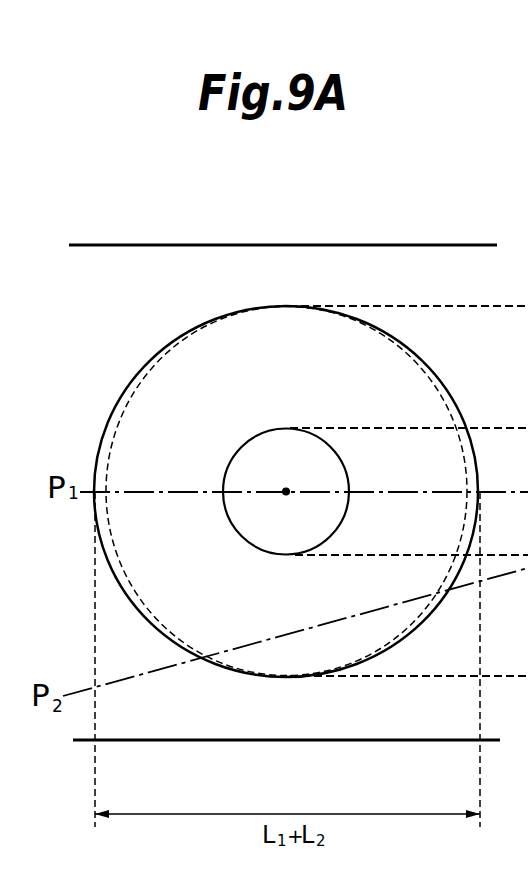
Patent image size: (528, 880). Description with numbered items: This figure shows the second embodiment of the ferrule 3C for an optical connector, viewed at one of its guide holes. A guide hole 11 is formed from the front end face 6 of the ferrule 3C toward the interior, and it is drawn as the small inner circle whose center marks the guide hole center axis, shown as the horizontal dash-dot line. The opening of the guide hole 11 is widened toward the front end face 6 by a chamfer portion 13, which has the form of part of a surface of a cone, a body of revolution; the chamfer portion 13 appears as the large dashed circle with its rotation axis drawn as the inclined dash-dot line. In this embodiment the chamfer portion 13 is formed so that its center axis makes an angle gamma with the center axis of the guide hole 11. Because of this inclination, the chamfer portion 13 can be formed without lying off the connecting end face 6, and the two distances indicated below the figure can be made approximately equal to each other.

The ferrule 3C is at (413, 258).
The front end face 6 is at (173, 725).
The guide hole 11 is at (248, 458).
The chamfer portion 13 is at (402, 618).